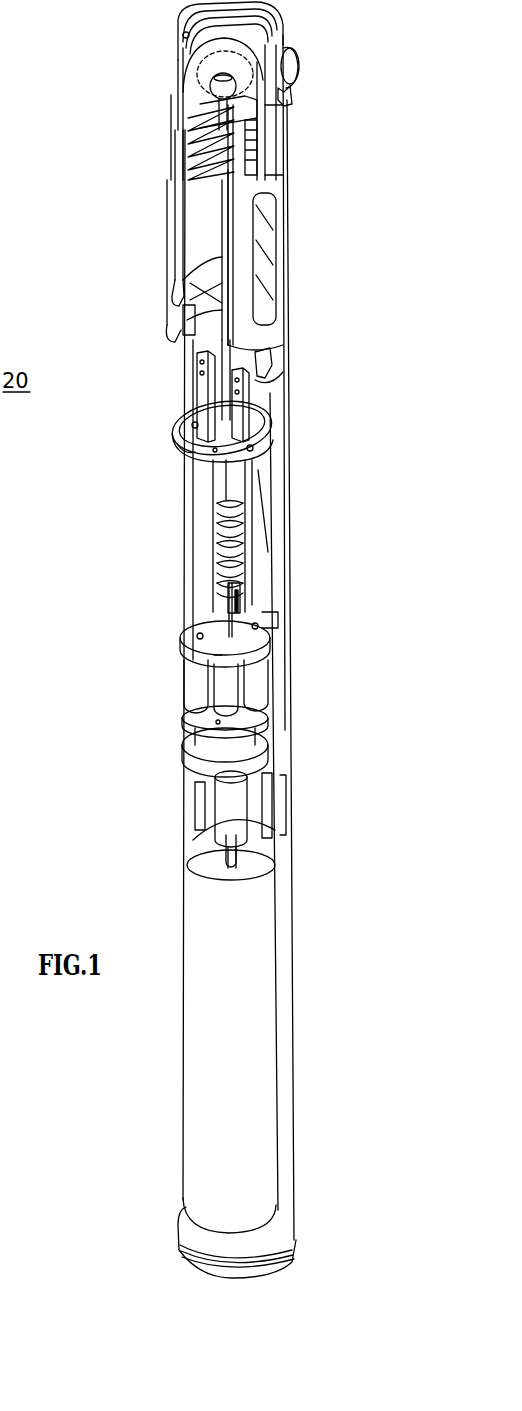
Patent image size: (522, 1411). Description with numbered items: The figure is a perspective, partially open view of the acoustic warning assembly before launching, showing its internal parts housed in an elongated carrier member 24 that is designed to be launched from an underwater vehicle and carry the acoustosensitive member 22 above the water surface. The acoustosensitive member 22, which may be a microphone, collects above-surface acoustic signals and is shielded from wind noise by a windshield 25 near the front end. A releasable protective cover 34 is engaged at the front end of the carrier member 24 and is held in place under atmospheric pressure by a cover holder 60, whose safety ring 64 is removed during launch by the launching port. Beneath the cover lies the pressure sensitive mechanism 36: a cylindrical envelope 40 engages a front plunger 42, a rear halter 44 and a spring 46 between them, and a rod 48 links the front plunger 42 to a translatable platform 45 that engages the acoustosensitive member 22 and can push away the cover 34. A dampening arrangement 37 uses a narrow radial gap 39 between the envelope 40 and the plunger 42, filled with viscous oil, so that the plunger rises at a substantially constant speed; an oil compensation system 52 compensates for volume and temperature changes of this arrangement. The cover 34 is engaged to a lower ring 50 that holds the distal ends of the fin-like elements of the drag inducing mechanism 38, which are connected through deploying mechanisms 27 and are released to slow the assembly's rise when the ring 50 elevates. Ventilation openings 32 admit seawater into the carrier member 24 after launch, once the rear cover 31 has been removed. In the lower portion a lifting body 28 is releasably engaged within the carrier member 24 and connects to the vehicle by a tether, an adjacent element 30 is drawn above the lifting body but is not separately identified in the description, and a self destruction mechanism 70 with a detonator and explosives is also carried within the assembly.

The acoustosensitive member 22 is at (195, 108).
The carrier member 24 is at (280, 583).
The windshield 25 is at (205, 62).
The deploying mechanisms 27 is at (193, 338).
The lifting body 28 is at (197, 1078).
The piston 30 is at (225, 822).
The rear cover 31 is at (185, 1246).
The ventilation openings 32 is at (205, 781).
The protective cover 34 is at (268, 26).
The pressure sensitive mechanism 36 is at (215, 540).
The dampening arrangement 37 is at (245, 512).
The drag inducing mechanism 38 is at (197, 283).
The narrow radial gap 39 is at (213, 500).
The cylindrical envelope 40 is at (245, 505).
The front plunger 42 is at (262, 492).
The rear halter 44 is at (265, 565).
The translatable platform 45 is at (185, 134).
The spring 46 is at (222, 556).
The rod 48 is at (222, 238).
The lower ring 50 is at (205, 98).
The oil compensation system 52 is at (200, 602).
The cover holder 60 is at (300, 50).
The safety ring 64 is at (290, 84).
The self destruction mechanism 70 is at (190, 698).